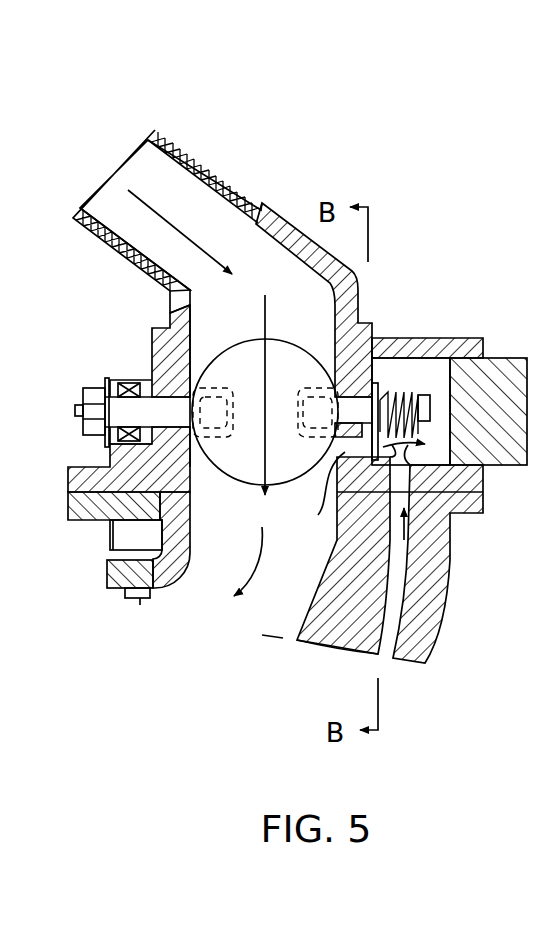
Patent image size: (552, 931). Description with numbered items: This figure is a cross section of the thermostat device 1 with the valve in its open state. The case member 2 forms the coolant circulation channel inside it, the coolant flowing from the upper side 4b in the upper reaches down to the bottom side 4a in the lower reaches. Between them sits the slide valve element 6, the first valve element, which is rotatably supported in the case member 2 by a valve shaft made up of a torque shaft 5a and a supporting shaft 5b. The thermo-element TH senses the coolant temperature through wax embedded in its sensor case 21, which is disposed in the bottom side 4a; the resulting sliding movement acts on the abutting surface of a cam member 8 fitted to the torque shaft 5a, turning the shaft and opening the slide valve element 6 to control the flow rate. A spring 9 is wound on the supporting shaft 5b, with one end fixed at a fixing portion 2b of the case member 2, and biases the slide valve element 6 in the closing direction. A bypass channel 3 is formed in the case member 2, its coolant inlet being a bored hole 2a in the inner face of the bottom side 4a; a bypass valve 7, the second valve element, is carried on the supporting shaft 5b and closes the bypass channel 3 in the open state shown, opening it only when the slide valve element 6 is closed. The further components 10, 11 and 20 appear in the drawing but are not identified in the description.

The thermostat device 1 is at (380, 170).
The case member 2 is at (278, 203).
The bored hole 2a is at (318, 515).
The fixing portion 2b is at (380, 350).
The bypass channel 3 is at (392, 660).
The bottom side 4a is at (277, 613).
The upper side 4b is at (178, 187).
The torque shaft 5a is at (132, 413).
The supporting shaft 5b is at (377, 372).
The slide valve element 6 is at (150, 318).
The bypass valve 7 is at (452, 530).
The cam member 8 is at (104, 378).
The spring 9 is at (428, 395).
The bearing 10 is at (137, 378).
The nut 11 is at (90, 412).
The sensor holder 20 is at (108, 553).
The thermo-element TH is at (108, 585).
The sensor case 21 is at (138, 600).